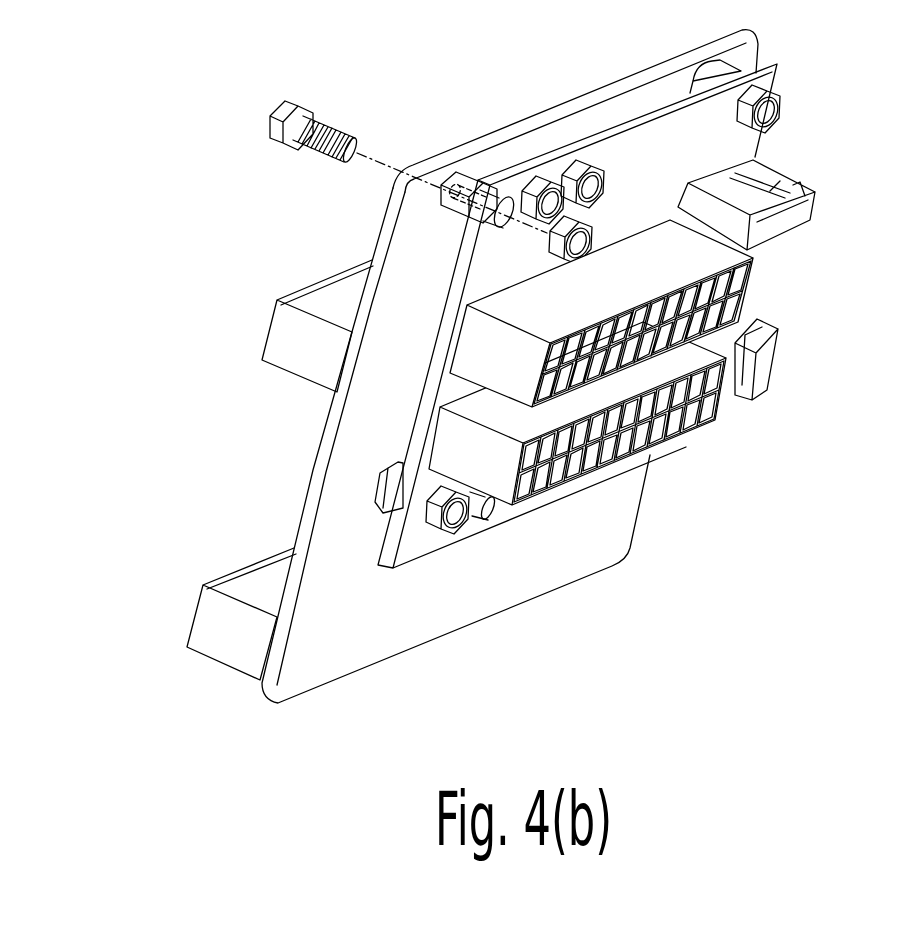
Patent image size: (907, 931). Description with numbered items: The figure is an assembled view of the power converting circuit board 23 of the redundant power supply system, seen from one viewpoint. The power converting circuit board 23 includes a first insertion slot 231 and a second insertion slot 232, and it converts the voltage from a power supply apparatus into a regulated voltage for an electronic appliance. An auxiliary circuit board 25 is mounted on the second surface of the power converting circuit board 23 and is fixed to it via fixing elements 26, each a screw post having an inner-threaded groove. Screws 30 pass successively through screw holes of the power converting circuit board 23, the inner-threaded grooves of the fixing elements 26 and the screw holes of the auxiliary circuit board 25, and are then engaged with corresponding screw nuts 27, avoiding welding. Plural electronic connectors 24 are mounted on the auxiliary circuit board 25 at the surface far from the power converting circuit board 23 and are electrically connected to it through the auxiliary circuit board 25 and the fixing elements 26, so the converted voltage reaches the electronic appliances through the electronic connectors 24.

The power converting circuit board 23 is at (322, 477).
The first insertion slot 231 is at (307, 353).
The second insertion slot 232 is at (233, 642).
The electronic connectors 24 is at (692, 264).
The auxiliary circuit board 25 is at (450, 278).
The fixing elements 26 is at (467, 177).
The screw nuts 27 is at (543, 187).
The screws 30 is at (288, 100).